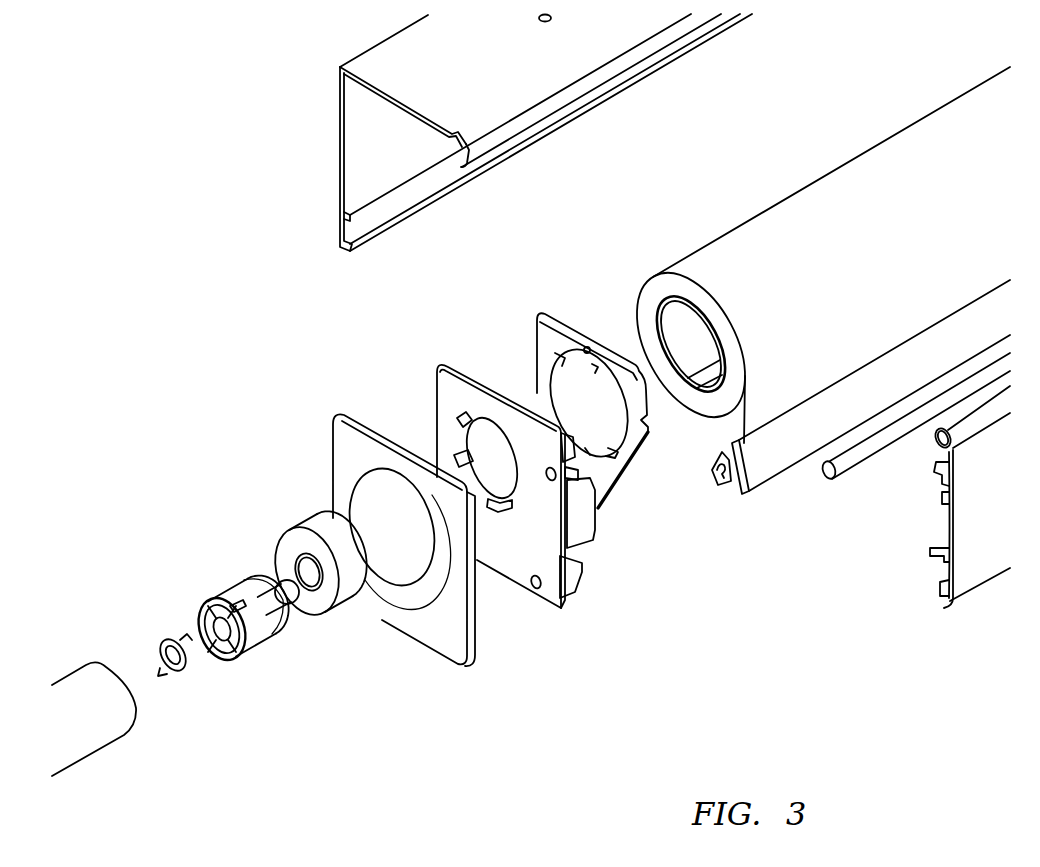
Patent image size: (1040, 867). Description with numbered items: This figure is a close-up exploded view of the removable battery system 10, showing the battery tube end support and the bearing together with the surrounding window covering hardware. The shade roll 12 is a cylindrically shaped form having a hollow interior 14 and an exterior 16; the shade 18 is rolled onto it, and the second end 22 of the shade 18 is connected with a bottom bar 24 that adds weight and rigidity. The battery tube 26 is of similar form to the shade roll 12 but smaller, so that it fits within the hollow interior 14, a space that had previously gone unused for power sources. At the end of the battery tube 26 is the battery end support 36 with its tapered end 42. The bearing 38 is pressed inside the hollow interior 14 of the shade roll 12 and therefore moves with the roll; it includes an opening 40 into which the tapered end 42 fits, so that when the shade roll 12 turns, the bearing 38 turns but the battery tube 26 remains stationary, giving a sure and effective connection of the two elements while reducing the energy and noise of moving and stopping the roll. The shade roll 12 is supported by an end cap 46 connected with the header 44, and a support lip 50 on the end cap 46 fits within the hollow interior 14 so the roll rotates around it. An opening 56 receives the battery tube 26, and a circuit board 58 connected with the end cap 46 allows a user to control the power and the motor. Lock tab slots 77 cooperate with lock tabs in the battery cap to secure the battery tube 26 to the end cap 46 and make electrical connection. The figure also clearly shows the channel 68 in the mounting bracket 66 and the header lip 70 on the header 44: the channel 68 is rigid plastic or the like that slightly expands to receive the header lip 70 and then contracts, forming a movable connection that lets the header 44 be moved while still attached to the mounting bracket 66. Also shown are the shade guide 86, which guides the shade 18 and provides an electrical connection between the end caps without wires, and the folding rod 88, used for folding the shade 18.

The removable battery system 10 is at (187, 392).
The shade roll 12 is at (676, 300).
The hollow interior 14 is at (657, 305).
The exterior 16 is at (674, 320).
The shade 18 is at (833, 275).
The second end 22 is at (764, 406).
The bottom bar 24 is at (765, 472).
The battery tube 26 is at (82, 680).
The battery end support 36 is at (224, 598).
The bearing 38 is at (350, 600).
The opening 40 is at (308, 578).
The tapered end 42 is at (276, 585).
The header 44 is at (972, 580).
The end cap 46 is at (556, 605).
The support lip 50 is at (488, 437).
The opening 56 is at (372, 494).
The circuit board 58 is at (596, 475).
The mounting bracket 66 is at (425, 87).
The channel 68 is at (458, 160).
The header lip 70 is at (937, 445).
The lock tab slots 77 is at (460, 420).
The shade guide 86 is at (718, 480).
The folding rod 88 is at (840, 468).